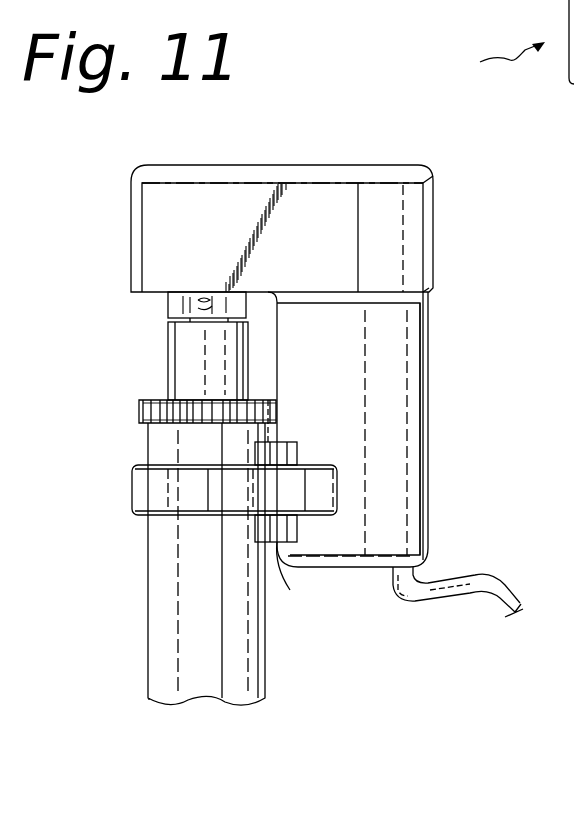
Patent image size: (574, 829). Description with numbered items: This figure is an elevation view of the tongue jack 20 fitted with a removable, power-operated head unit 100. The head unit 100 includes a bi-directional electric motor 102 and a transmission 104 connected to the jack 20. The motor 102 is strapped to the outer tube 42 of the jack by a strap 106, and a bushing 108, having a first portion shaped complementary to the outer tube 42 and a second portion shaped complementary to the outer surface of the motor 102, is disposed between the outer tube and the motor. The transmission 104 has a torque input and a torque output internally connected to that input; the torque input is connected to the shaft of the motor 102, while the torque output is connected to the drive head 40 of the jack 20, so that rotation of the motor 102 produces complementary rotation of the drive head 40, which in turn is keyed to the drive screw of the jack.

The power-operated head unit 100 is at (95, 180).
The bi-directional electric motor 102 is at (413, 458).
The transmission 104 is at (297, 195).
The strap 106 is at (145, 490).
The bushing 108 is at (270, 545).
The drive head 40 is at (168, 310).
The outer tube 42 is at (148, 583).
The tongue jack 20 is at (112, 660).